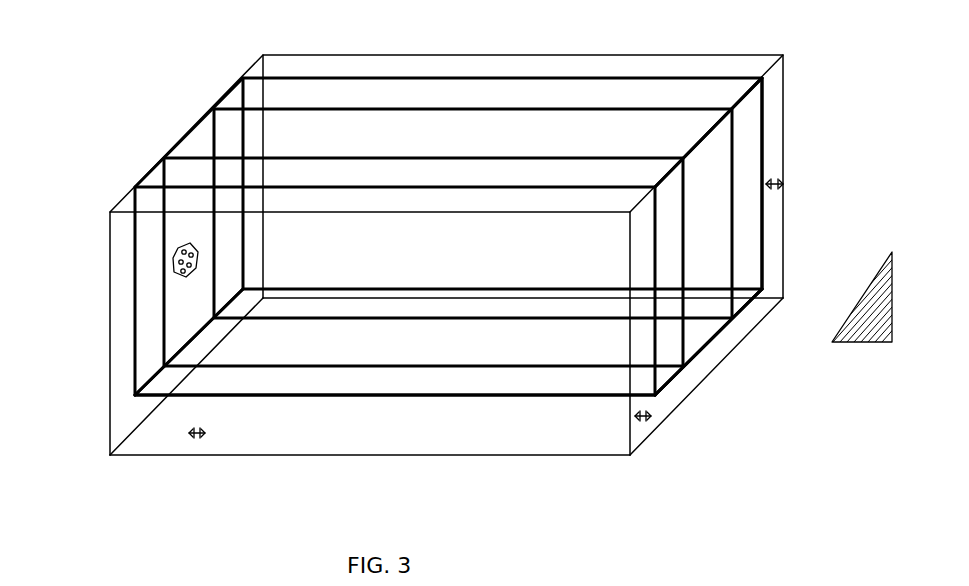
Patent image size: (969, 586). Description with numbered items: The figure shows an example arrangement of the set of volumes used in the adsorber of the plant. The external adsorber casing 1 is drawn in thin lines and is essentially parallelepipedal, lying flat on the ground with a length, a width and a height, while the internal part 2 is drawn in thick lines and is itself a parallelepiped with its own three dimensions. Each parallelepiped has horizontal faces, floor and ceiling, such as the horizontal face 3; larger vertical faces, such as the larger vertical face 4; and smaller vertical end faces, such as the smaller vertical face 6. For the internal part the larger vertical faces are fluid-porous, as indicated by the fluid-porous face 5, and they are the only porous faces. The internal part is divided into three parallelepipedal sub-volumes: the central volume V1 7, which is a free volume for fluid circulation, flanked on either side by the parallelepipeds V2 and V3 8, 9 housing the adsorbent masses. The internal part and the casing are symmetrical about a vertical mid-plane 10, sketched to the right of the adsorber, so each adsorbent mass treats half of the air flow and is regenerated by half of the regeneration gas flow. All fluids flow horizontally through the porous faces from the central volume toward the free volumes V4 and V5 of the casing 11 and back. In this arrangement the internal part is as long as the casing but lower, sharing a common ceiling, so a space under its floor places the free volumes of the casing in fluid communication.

The external adsorber casing 1 is at (104, 304).
The internal part of the set of volumes 2 is at (186, 155).
The horizontal face 3 is at (650, 416).
The larger vertical face 4 is at (197, 433).
The fluid-porous face 5 is at (173, 258).
The smaller vertical face 6 is at (783, 184).
The central volume V1 7 is at (347, 147).
The parallelepiped V2 8 is at (221, 383).
The parallelepiped V3 9 is at (747, 118).
The vertical mid-plane 10 is at (867, 320).
The free volume V4 and V5 of the casing 11 is at (373, 423).